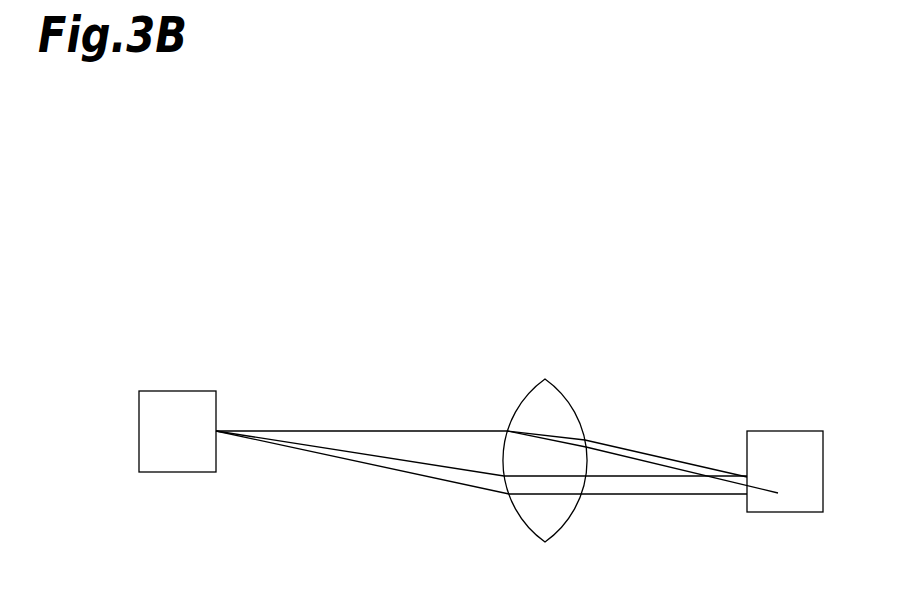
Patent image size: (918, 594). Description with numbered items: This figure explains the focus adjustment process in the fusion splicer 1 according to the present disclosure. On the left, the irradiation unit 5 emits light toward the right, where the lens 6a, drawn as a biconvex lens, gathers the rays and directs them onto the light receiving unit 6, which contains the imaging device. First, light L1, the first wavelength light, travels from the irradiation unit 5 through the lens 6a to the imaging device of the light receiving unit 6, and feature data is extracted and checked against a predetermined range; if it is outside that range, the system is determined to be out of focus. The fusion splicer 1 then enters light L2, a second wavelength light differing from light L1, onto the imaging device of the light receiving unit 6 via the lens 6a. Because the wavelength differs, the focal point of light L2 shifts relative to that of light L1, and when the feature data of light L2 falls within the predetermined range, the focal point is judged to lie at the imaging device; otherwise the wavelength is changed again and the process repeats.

The fusion splicer 1 is at (666, 270).
The irradiation unit 5 is at (176, 391).
The light receiving unit 6 is at (782, 430).
The lens 6a is at (548, 380).
The light L1 is at (476, 490).
The light L2 is at (674, 458).